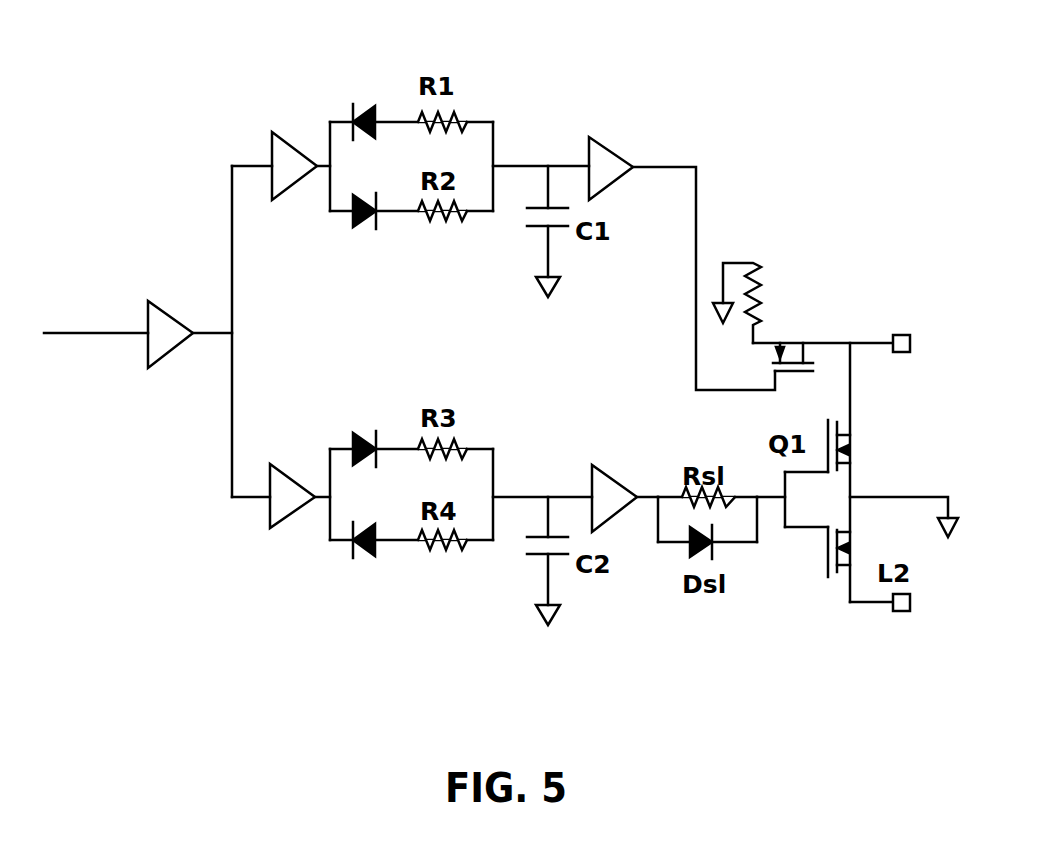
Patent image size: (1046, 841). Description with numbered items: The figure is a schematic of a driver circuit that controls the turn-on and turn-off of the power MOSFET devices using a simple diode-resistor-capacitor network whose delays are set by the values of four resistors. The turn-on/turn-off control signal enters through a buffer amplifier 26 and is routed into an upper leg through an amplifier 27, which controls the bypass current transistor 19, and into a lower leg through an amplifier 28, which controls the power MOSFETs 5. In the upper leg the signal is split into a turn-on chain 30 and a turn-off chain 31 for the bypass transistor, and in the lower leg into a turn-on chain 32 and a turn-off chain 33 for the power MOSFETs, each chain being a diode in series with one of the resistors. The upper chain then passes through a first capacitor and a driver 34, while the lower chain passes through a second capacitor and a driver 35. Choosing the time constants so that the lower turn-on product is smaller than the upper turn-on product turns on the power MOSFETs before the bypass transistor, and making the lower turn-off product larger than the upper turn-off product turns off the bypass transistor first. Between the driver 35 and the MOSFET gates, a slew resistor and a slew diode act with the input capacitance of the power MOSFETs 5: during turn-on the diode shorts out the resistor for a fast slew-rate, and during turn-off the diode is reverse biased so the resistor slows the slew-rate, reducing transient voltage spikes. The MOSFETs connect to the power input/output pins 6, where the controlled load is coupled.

The buffer amplifier 26 is at (161, 297).
The amplifier 27 is at (287, 130).
The amplifier 28 is at (287, 530).
The Q3 turn-on chain 30 is at (405, 225).
The Q3 turn-off chain 31 is at (408, 115).
The Q1 turn-on chain 32 is at (392, 440).
The Q1 turn-off chain 33 is at (392, 545).
The driver 34 is at (608, 140).
The driver 35 is at (618, 470).
The bypass current transistor Q3 19 is at (763, 371).
The power MOSFETs 5 is at (835, 595).
The power input/output pins 6 is at (905, 360).